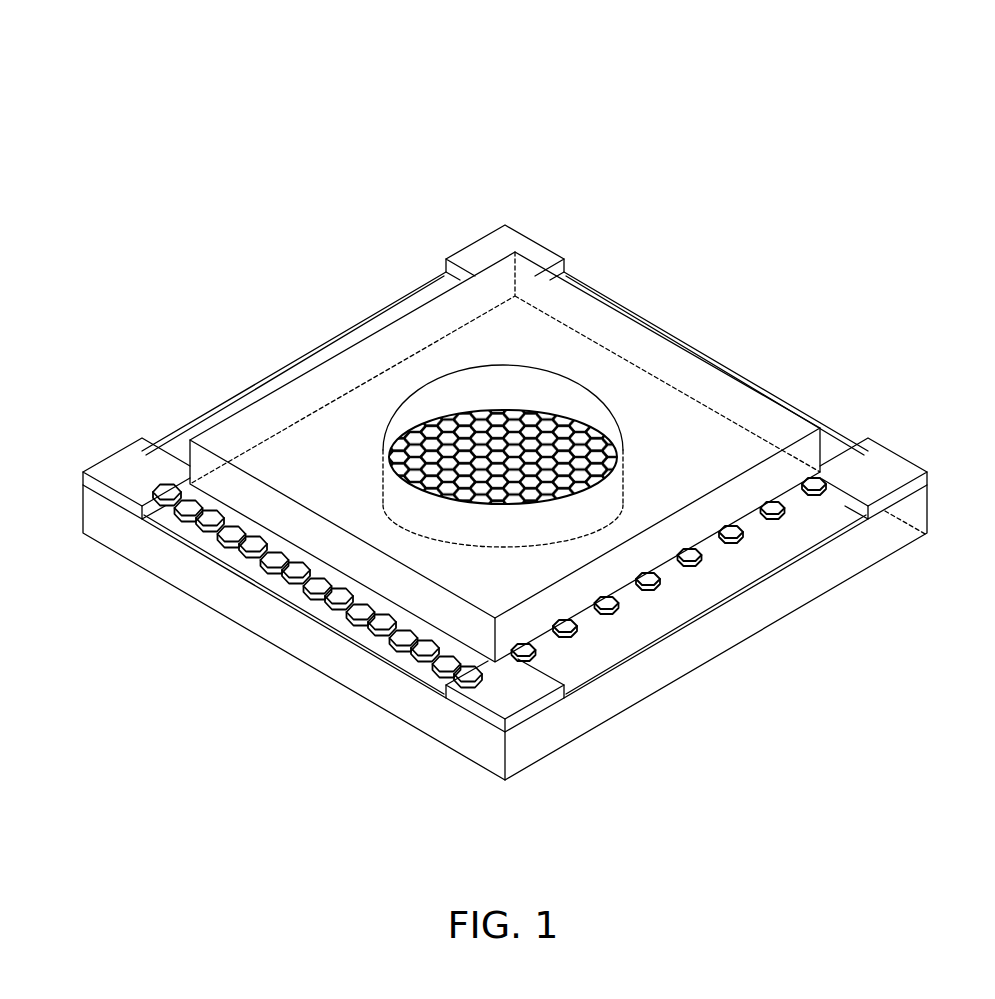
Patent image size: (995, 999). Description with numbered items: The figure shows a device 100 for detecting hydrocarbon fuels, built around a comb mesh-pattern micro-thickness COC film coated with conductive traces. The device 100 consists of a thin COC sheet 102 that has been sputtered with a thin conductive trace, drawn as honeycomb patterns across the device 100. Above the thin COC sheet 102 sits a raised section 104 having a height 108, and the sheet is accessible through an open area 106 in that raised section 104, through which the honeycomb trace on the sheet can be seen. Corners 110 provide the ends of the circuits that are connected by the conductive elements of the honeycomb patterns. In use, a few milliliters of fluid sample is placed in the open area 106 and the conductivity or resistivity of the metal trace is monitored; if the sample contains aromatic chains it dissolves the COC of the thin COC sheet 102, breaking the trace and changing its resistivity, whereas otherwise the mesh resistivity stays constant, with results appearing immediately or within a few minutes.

The device 100 is at (779, 91).
The thin COC sheet 102 is at (384, 748).
The raised section 104 is at (444, 216).
The open area 106 is at (582, 410).
The height 108 is at (513, 368).
The corners 110 is at (502, 242).